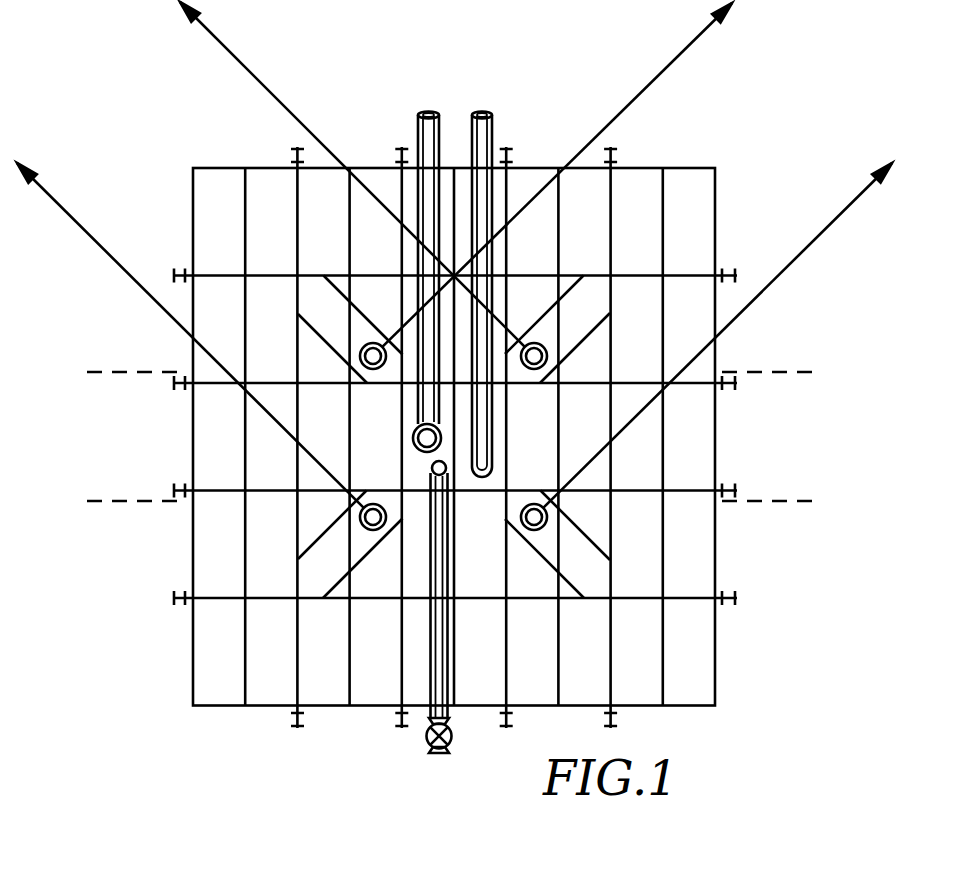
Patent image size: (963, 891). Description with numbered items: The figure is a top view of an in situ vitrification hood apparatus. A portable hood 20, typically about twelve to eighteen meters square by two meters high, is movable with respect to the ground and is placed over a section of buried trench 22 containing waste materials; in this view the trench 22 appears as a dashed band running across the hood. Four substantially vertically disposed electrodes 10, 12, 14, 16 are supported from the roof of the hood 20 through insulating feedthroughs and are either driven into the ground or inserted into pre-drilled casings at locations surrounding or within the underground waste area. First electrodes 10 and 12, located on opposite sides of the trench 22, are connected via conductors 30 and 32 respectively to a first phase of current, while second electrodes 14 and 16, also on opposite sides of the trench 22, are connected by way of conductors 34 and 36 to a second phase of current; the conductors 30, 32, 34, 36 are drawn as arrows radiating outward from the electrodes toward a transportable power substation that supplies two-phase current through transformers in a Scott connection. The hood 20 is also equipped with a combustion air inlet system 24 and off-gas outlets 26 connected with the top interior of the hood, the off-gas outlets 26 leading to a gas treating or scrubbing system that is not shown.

The electrode 10 is at (362, 350).
The electrode 12 is at (554, 528).
The electrode 14 is at (554, 350).
The electrode 16 is at (366, 528).
The portable hood 20 is at (715, 628).
The buried trench 22 is at (773, 500).
The combustion air inlet system 24 is at (430, 680).
The off-gas outlets 26 is at (472, 127).
The conductor 30 is at (653, 80).
The conductor 32 is at (827, 222).
The conductor 34 is at (268, 86).
The conductor 36 is at (75, 218).